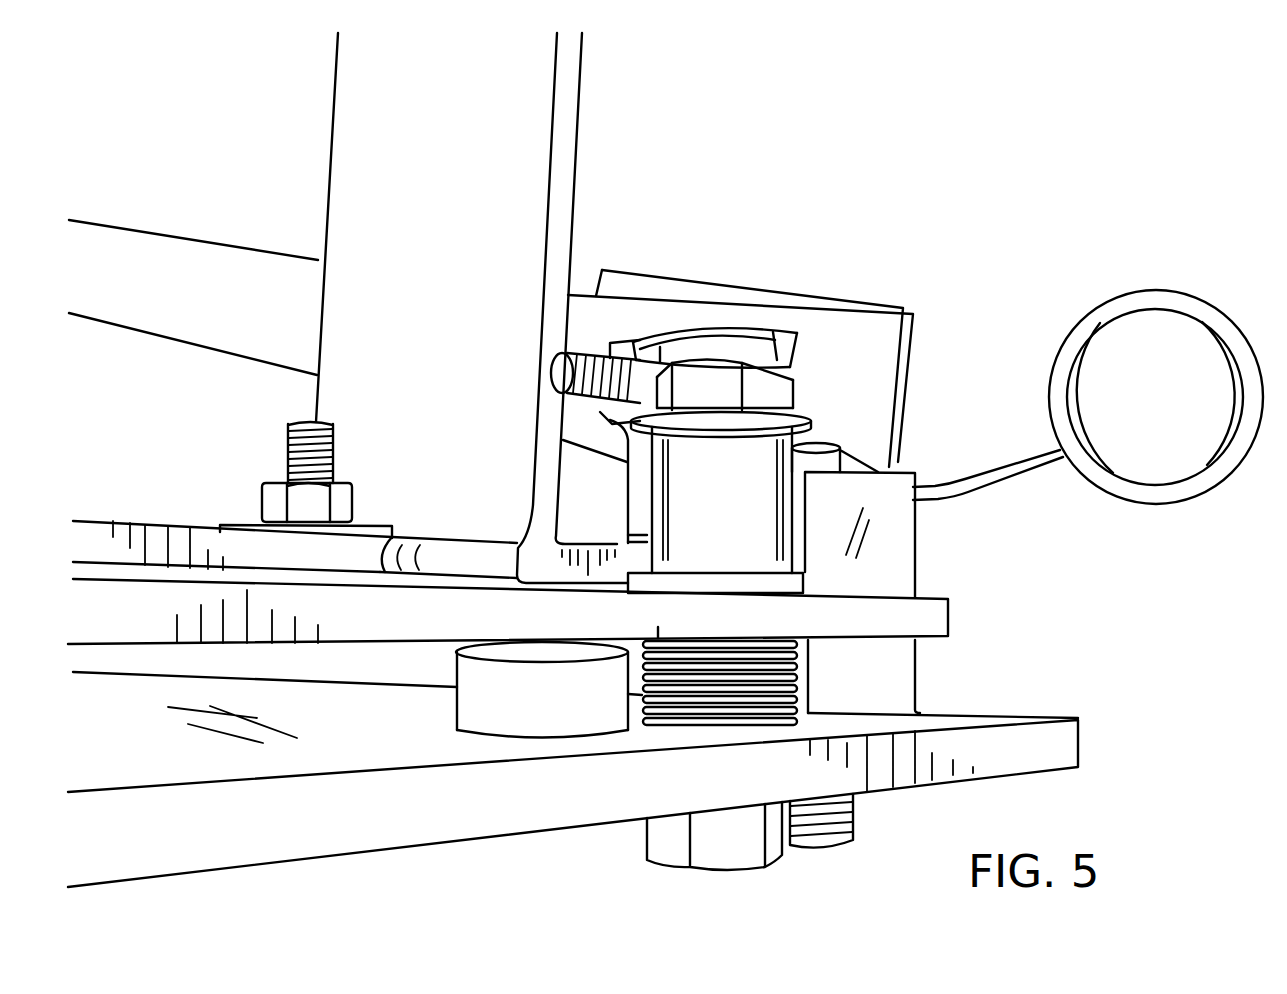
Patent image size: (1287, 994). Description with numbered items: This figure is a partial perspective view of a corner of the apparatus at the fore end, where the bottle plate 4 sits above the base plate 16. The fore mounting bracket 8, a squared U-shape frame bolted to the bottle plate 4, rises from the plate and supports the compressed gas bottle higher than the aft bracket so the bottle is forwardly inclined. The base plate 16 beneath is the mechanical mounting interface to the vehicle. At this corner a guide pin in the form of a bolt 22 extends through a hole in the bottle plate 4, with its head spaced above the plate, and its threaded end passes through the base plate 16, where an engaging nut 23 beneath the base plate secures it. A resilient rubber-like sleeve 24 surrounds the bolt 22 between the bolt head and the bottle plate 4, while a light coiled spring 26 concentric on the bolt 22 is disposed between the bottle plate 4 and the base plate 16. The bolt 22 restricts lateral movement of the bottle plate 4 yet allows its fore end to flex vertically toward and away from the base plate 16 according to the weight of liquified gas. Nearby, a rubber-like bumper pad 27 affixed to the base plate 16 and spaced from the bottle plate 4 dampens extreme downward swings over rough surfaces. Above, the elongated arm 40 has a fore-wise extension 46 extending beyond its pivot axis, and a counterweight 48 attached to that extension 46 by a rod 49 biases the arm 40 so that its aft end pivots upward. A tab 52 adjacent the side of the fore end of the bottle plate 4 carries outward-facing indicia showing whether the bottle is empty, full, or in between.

The bottle plate 4 is at (948, 618).
The fore mounting bracket 8 is at (433, 259).
The base plate 16 is at (1075, 755).
The bolt 22 is at (703, 356).
The nut 23 is at (723, 868).
The sleeve 24 is at (747, 511).
The coiled spring 26 is at (640, 677).
The bumper pad 27 is at (530, 715).
The elongated arm 40 is at (197, 306).
The fore-wise extension 46 is at (872, 371).
The counterweight 48 is at (1175, 406).
The rod 49 is at (1033, 445).
The tab 52 is at (910, 557).